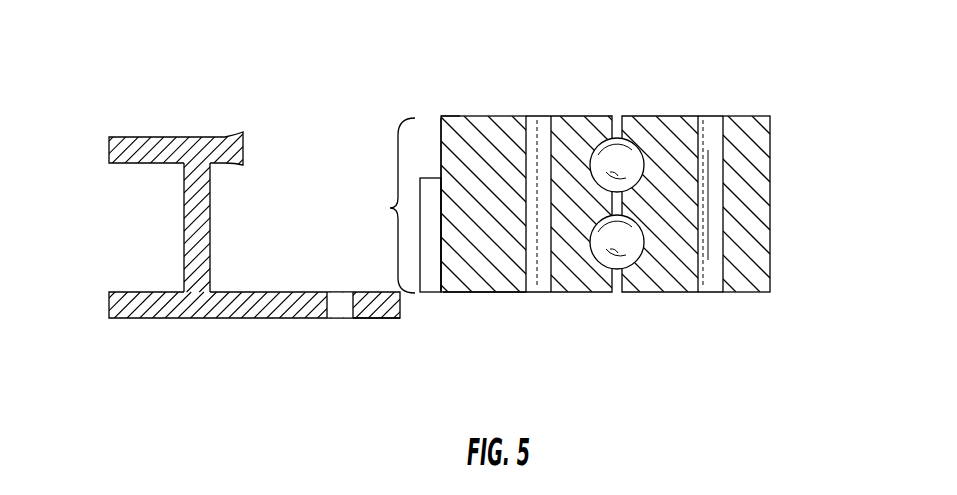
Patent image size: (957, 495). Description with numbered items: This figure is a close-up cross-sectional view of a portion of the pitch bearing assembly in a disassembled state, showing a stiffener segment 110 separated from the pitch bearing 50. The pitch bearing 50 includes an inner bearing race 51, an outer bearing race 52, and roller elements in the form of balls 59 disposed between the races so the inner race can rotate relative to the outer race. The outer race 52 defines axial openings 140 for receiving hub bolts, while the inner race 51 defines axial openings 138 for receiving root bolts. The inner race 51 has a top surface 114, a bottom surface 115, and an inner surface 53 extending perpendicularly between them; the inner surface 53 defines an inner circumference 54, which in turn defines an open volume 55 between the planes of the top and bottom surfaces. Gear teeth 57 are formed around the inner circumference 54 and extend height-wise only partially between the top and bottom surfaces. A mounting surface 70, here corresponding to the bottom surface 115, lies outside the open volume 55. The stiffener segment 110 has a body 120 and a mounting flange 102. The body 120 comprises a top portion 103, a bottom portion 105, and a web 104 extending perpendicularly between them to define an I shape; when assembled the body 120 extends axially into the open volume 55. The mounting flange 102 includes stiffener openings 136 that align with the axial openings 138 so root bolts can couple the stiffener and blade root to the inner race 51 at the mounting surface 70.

The pitch bearing 50 is at (580, 202).
The inner bearing race 51 is at (452, 153).
The outer bearing race 52 is at (739, 153).
The inner surface 53 is at (440, 136).
The inner circumference 54 is at (434, 114).
The open volume 55 is at (389, 205).
The gear teeth 57 is at (427, 215).
The balls 59 is at (655, 150).
The mounting surface 70 is at (472, 300).
The mounting flange 102 is at (377, 325).
The top portion 103 is at (112, 150).
The web 104 is at (198, 215).
The bottom portion 105 is at (120, 305).
The stiffener segment 110 is at (244, 190).
The top surface 114 is at (483, 159).
The bottom surface 115 is at (578, 293).
The body 120 is at (200, 130).
The stiffener openings 136 is at (345, 296).
The axial openings 138 is at (540, 285).
The axial openings 140 is at (708, 283).